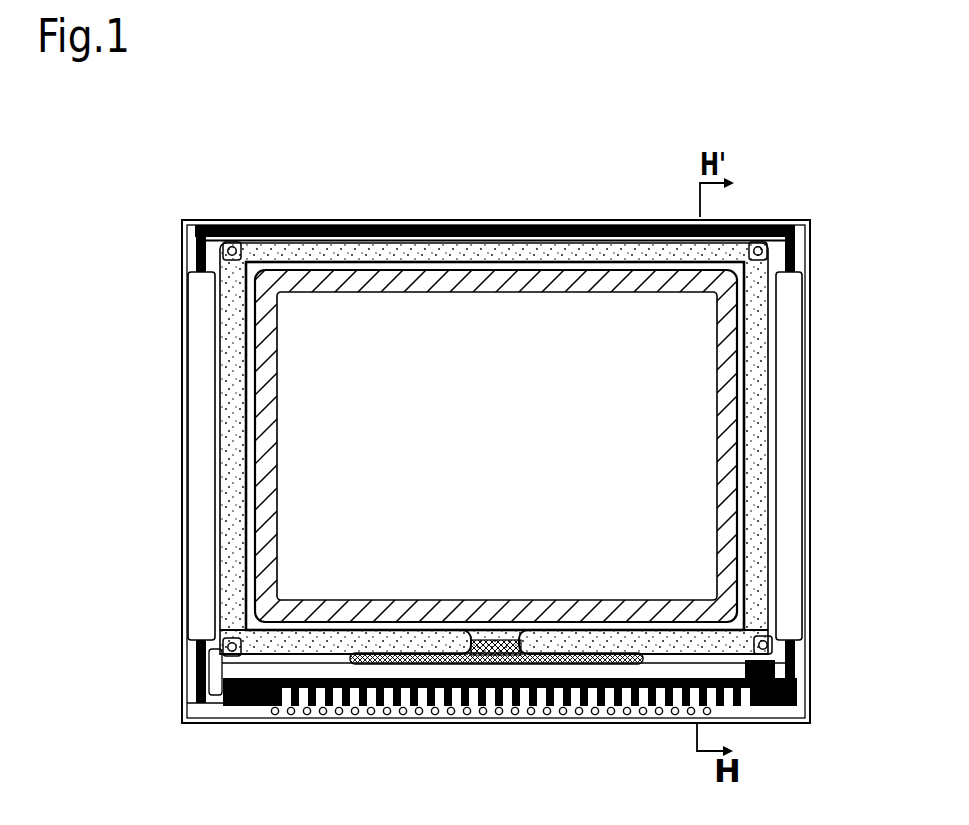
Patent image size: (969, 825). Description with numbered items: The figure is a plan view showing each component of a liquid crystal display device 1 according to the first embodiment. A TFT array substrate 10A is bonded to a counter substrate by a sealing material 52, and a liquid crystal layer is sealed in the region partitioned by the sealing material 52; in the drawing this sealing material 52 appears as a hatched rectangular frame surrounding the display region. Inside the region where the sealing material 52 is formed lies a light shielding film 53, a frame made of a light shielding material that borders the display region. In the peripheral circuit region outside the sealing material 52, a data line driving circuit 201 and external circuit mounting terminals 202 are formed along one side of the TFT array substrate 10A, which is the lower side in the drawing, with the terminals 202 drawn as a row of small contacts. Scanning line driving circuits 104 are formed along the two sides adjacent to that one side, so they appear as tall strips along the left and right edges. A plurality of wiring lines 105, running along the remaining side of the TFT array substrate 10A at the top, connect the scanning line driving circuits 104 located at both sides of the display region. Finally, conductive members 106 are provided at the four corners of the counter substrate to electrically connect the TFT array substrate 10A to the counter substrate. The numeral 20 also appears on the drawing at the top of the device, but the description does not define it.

The liquid crystal display device 1 is at (538, 202).
The housing frame 20 is at (473, 222).
The wiring lines 105 is at (326, 222).
The scanning line driving circuits 104 is at (200, 598).
The conductive members 106 is at (232, 220).
The TFT array substrate 10A is at (380, 219).
The sealing material 52 is at (760, 473).
The light shielding film 53 is at (723, 377).
The data line driving circuit 201 is at (273, 670).
The external circuit mounting terminals 202 is at (663, 723).